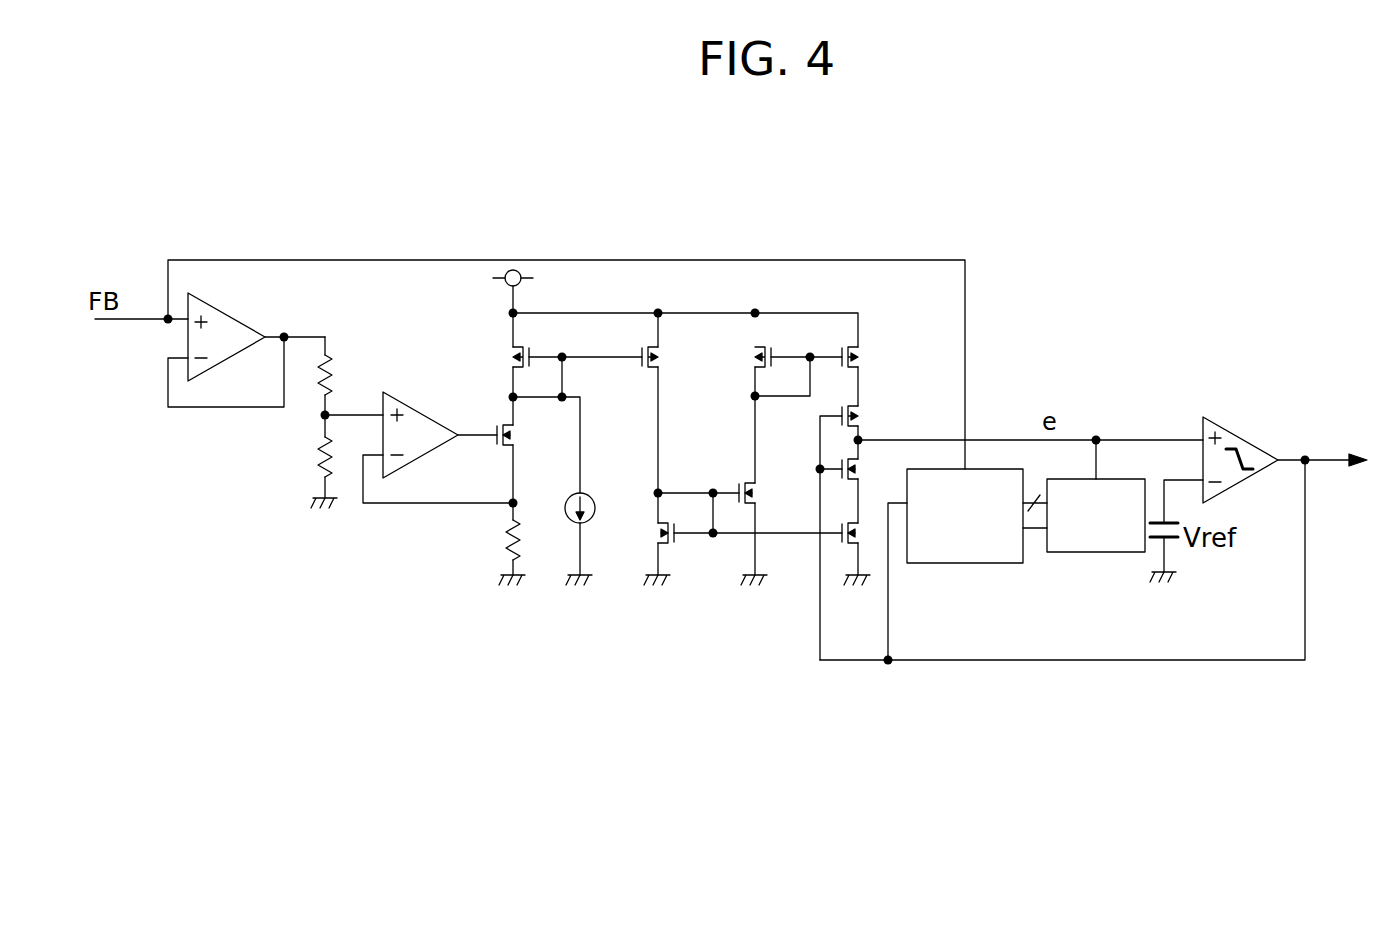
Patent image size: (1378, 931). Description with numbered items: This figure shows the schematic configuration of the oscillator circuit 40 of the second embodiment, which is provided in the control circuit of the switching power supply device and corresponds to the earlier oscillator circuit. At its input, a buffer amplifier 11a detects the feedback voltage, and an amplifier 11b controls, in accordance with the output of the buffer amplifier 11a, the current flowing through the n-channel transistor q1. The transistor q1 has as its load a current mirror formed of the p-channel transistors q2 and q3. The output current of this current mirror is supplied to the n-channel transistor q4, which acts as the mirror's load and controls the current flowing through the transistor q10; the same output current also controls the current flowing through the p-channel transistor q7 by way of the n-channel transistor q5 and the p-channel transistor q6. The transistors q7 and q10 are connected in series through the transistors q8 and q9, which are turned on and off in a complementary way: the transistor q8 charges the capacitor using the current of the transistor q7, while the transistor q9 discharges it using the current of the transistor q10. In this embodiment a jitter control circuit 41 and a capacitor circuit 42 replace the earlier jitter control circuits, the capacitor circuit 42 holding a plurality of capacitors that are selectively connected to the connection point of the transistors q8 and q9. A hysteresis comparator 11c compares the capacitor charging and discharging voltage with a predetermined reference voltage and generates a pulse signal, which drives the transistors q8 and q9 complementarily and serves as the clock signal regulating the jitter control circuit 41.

The oscillator circuit 40 is at (866, 282).
The jitter control circuit 41 is at (990, 488).
The capacitor circuit 42 is at (1117, 490).
The buffer amplifier 11a is at (227, 340).
The amplifier 11b is at (415, 440).
The hysteresis comparator 11c is at (1257, 445).
The transistor q1 is at (523, 435).
The transistor q2 is at (558, 357).
The transistor q3 is at (669, 359).
The transistor q4 is at (732, 534).
The transistor q5 is at (728, 495).
The transistor q6 is at (781, 359).
The transistor q7 is at (868, 359).
The transistor q8 is at (857, 531).
The transistor q9 is at (857, 469).
The transistor q10 is at (868, 528).